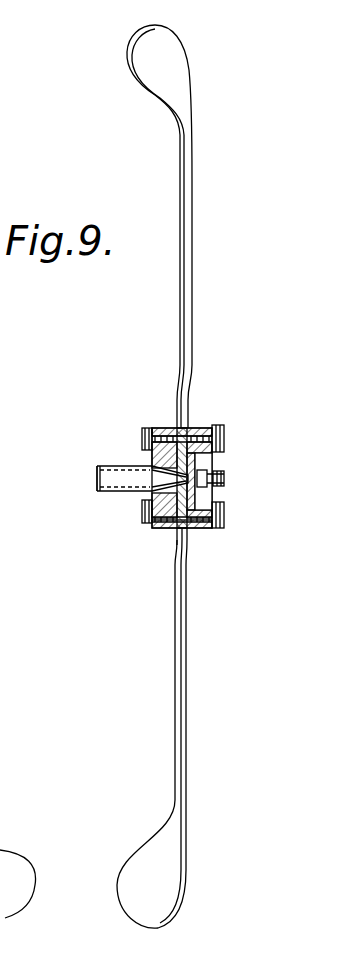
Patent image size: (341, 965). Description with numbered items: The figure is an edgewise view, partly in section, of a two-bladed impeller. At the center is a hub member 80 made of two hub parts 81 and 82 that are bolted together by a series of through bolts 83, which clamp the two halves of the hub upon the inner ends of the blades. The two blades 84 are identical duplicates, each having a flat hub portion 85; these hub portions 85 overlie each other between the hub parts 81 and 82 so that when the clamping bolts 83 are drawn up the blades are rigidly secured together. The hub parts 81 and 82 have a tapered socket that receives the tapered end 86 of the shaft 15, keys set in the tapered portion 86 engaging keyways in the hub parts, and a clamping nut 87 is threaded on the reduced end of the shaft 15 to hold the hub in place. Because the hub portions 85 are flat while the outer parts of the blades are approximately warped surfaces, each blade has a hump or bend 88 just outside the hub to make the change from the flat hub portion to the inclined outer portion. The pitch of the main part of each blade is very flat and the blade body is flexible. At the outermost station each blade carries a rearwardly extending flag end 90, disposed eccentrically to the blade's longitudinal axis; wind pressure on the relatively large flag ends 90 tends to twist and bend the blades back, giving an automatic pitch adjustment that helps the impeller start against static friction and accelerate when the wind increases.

The shaft 15 is at (110, 483).
The hub member 80 is at (185, 481).
The hub part 81 is at (165, 530).
The hub part 82 is at (207, 533).
The through bolts 83 is at (225, 432).
The blades 84 is at (190, 253).
The hub portions 85 is at (180, 430).
The tapered end 86 is at (152, 472).
The clamping nut 87 is at (225, 473).
The hump or bend 88 is at (188, 390).
The flag end 90 is at (162, 52).